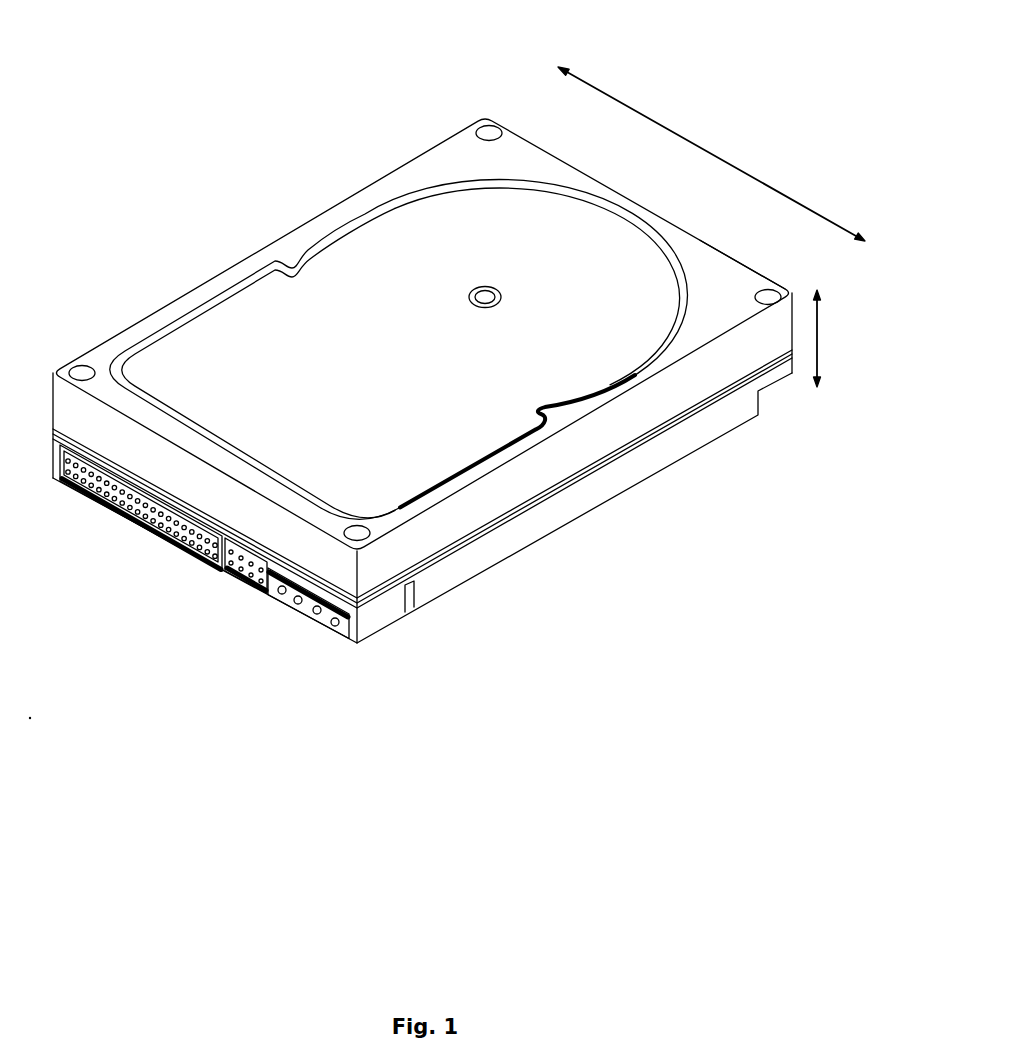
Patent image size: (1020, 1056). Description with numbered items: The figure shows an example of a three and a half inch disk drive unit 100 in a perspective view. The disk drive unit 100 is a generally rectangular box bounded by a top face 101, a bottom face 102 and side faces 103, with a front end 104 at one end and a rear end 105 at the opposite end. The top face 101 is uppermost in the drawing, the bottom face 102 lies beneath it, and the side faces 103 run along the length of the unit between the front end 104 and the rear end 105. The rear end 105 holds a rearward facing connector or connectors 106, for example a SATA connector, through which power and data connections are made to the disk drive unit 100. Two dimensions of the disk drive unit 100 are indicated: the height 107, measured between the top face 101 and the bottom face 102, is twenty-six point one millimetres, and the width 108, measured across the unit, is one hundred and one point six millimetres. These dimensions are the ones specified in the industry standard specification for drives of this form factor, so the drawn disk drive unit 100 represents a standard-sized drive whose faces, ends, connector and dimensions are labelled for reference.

The disk drive unit 100 is at (781, 50).
The top face 101 is at (397, 262).
The bottom face 102 is at (570, 594).
The side faces 103 is at (207, 262).
The front end 104 is at (720, 235).
The rear end 105 is at (259, 537).
The connector 106 is at (156, 548).
The height 107 is at (837, 338).
The width 108 is at (711, 154).